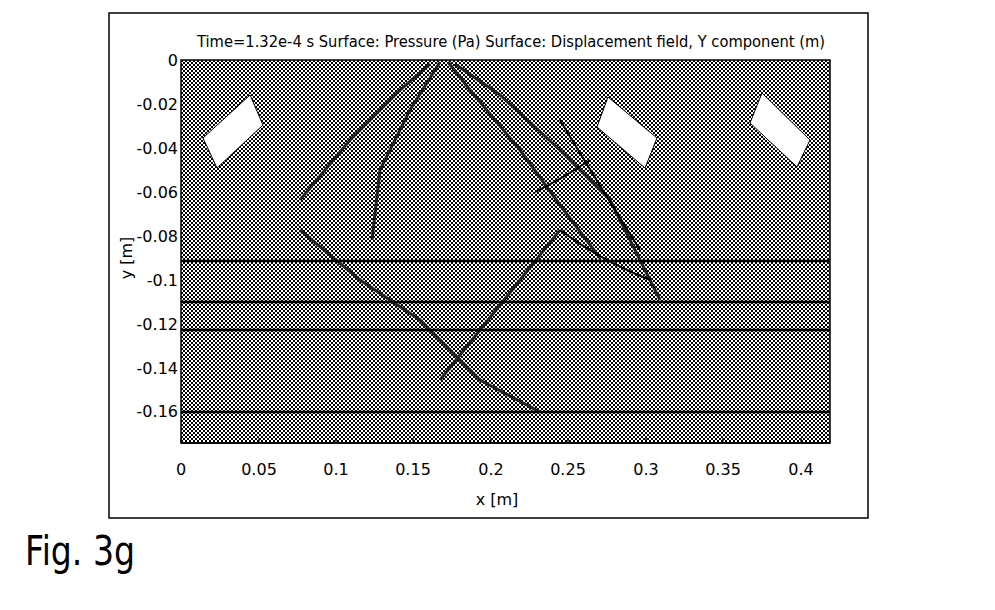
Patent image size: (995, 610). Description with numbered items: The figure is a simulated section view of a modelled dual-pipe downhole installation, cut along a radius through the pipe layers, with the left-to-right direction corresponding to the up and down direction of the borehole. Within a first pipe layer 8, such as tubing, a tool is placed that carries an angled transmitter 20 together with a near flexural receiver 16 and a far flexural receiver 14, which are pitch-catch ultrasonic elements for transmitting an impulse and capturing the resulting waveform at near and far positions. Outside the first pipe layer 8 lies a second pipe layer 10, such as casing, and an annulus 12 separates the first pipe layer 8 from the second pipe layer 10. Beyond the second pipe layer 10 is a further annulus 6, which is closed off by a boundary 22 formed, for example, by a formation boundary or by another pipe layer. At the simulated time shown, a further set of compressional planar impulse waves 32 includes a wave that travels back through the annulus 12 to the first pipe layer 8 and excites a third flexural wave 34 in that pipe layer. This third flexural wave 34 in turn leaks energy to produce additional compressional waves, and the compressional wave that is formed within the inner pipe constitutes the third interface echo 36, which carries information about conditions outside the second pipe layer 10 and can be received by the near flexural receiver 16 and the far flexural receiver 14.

The annulus 6 is at (806, 372).
The first pipe layer 8 is at (210, 243).
The second pipe layer 10 is at (196, 310).
The annulus 12 is at (806, 292).
The far flexural receiver 14 is at (786, 133).
The near flexural receiver 16 is at (612, 131).
The angled transmitter 20 is at (262, 120).
The boundary 22 is at (200, 428).
The further set of compressional planar impulse waves 32 is at (610, 272).
The third flexural wave 34 is at (600, 185).
The third interface echo 36 is at (535, 192).